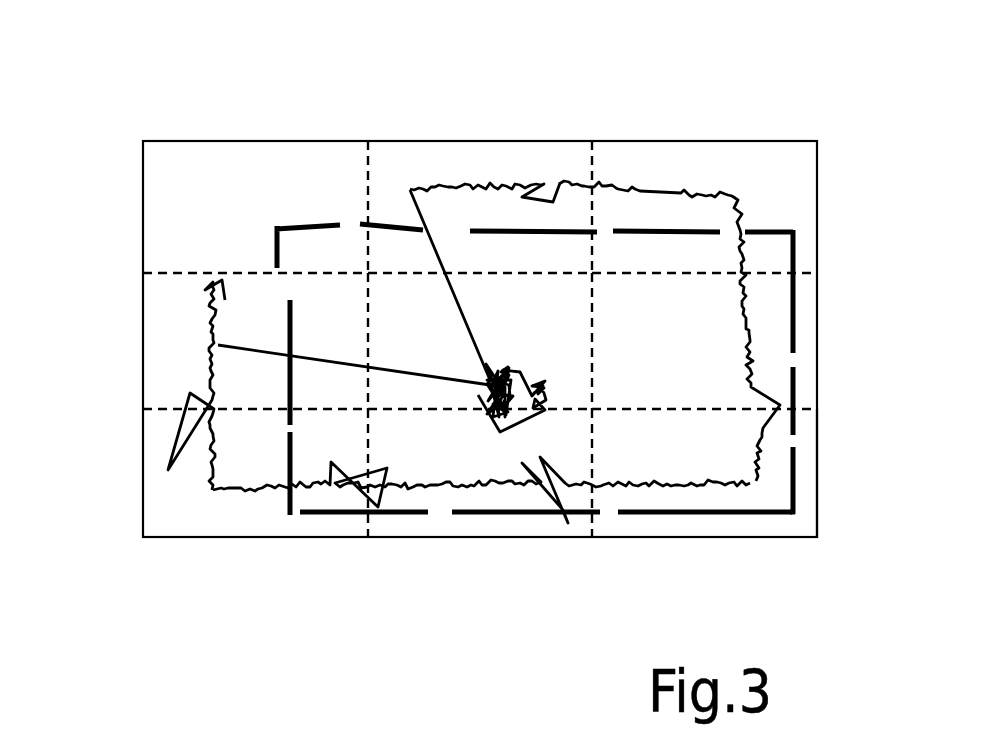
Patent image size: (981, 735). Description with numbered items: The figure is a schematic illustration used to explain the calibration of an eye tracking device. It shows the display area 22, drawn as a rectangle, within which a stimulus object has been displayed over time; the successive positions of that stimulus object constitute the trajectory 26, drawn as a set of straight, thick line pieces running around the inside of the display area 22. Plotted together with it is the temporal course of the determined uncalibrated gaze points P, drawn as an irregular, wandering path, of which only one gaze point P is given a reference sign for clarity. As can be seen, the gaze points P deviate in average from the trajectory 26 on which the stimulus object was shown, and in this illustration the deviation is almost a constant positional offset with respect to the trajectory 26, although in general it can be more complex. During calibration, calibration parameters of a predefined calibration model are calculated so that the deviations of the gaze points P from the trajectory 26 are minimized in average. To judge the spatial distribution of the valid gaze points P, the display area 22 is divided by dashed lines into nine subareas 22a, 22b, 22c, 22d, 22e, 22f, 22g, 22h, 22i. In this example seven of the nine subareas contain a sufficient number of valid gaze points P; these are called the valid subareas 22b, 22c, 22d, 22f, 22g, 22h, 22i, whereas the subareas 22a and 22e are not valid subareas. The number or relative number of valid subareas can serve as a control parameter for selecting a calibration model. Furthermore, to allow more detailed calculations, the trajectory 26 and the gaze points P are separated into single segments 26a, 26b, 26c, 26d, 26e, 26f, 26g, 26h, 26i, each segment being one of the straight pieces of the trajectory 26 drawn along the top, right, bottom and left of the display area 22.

The display area 22 is at (455, 167).
The subarea 22a is at (183, 213).
The subarea 22b is at (518, 163).
The subarea 22c is at (760, 170).
The subarea 22d is at (187, 340).
The subarea 22e is at (550, 324).
The subarea 22f is at (799, 338).
The subarea 22g is at (187, 475).
The subarea 22h is at (492, 523).
The subarea 22i is at (768, 522).
The trajectory 26 is at (315, 228).
The segment 26a is at (287, 228).
The segment 26b is at (513, 228).
The segment 26c is at (768, 233).
The segment 26d is at (794, 368).
The segment 26e is at (794, 483).
The segment 26f is at (665, 520).
The segment 26g is at (403, 520).
The segment 26h is at (318, 520).
The segment 26i is at (288, 307).
The gaze point P is at (560, 182).